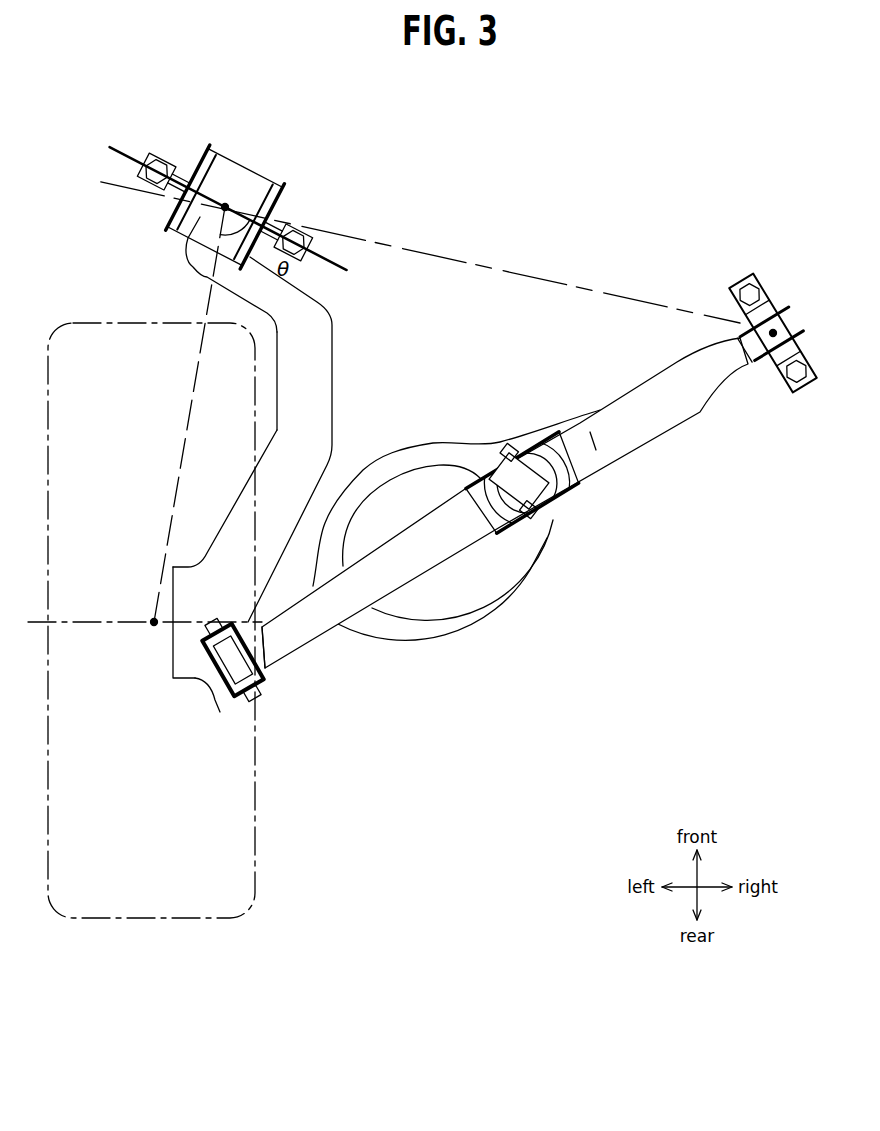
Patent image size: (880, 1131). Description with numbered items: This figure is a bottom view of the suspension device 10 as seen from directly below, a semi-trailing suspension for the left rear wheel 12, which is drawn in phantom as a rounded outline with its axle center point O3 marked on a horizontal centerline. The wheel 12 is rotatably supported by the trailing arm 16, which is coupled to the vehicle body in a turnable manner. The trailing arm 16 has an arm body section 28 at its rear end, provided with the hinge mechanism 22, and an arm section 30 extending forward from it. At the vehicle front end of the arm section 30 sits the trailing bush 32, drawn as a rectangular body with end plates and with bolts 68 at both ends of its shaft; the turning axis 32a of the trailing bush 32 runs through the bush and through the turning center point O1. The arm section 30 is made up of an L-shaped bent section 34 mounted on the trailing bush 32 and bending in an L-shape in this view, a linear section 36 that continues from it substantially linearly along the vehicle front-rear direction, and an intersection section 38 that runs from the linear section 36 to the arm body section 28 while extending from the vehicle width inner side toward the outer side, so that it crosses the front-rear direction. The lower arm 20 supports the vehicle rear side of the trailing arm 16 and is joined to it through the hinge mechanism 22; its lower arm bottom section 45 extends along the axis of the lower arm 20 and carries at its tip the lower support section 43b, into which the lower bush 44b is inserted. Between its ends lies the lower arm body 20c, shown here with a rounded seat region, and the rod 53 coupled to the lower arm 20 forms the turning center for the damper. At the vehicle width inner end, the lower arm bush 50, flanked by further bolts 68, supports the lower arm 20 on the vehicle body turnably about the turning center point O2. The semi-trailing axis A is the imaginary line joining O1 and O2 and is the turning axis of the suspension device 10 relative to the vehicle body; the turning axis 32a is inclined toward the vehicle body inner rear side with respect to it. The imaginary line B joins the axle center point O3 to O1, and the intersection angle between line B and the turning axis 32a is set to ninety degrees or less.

The suspension device 10 is at (637, 141).
The wheel 12 is at (84, 322).
The trailing arm 16 is at (261, 448).
The lower arm 20 is at (505, 519).
The lower arm body 20c is at (468, 628).
The hinge mechanism 22 is at (251, 688).
The arm body section 28 is at (170, 648).
The arm section 30 is at (337, 378).
The trailing bush 32 is at (258, 160).
The turning axis 32a is at (328, 280).
The L-shaped bent section 34 is at (196, 272).
The linear section 36 is at (277, 388).
The intersection section 38 is at (229, 510).
The lower support section 43b is at (267, 660).
The lower bush 44b is at (218, 673).
The lower arm bottom section 45 is at (396, 575).
The lower arm bush 50 is at (795, 320).
The rod 53 is at (550, 522).
The bolts 68 is at (170, 158).
The turning center point of the trailing arm O1 is at (229, 193).
The turning center point of the lower arm bush O2 is at (768, 368).
The axle center point O3 is at (131, 602).
The semi-trailing axis A is at (530, 278).
The imaginary line B is at (181, 458).